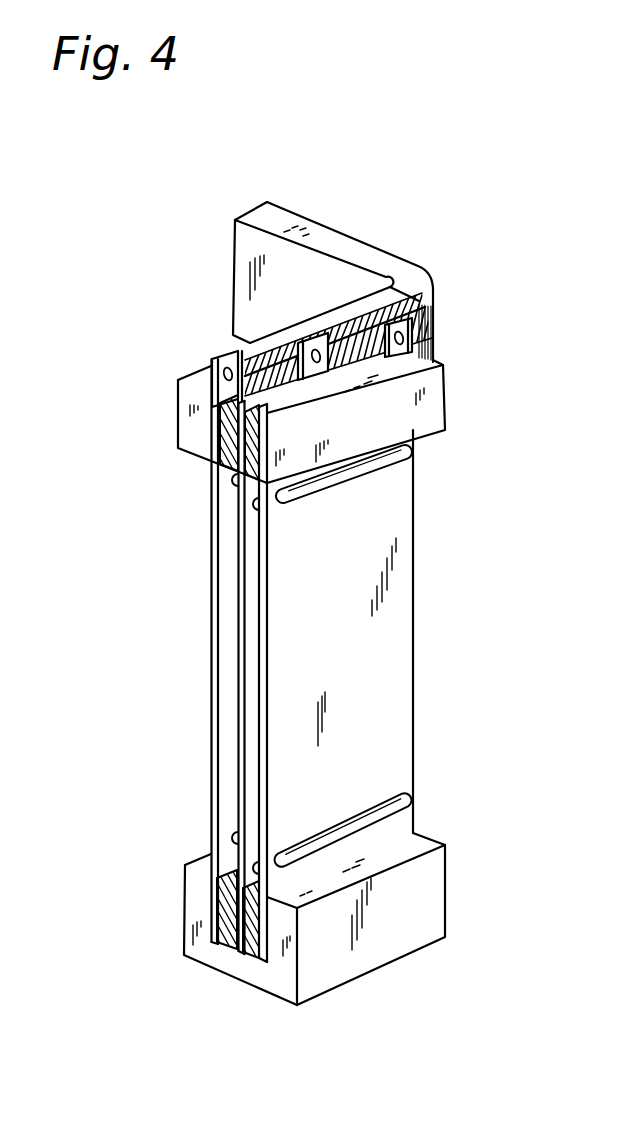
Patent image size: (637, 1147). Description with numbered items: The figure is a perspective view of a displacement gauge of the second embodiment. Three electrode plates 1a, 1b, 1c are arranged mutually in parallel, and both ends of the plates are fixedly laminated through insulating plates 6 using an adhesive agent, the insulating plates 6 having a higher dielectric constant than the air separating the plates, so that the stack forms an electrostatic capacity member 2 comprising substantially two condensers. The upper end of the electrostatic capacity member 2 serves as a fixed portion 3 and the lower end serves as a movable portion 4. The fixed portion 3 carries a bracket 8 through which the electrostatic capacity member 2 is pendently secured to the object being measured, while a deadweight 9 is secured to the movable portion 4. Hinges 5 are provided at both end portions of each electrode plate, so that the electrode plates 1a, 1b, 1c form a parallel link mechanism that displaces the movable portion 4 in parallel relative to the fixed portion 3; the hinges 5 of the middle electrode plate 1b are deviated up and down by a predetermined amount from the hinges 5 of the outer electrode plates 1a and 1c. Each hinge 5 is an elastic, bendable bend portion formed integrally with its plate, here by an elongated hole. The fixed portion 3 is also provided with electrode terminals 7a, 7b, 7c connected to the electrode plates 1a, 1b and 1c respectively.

The first electrode plate 1a is at (210, 577).
The second electrode plate 1b is at (240, 612).
The third electrode plate 1c is at (407, 573).
The electrostatic capacity member 2 is at (327, 660).
The fixed portion 3 is at (430, 410).
The movable portion 4 is at (195, 905).
The hinge 5 is at (256, 506).
The insulating plate 6 is at (222, 428).
The electrode terminal 7a is at (224, 358).
The electrode terminal 7b is at (313, 345).
The electrode terminal 7c is at (416, 327).
The bracket 8 is at (388, 262).
The deadweight 9 is at (287, 980).